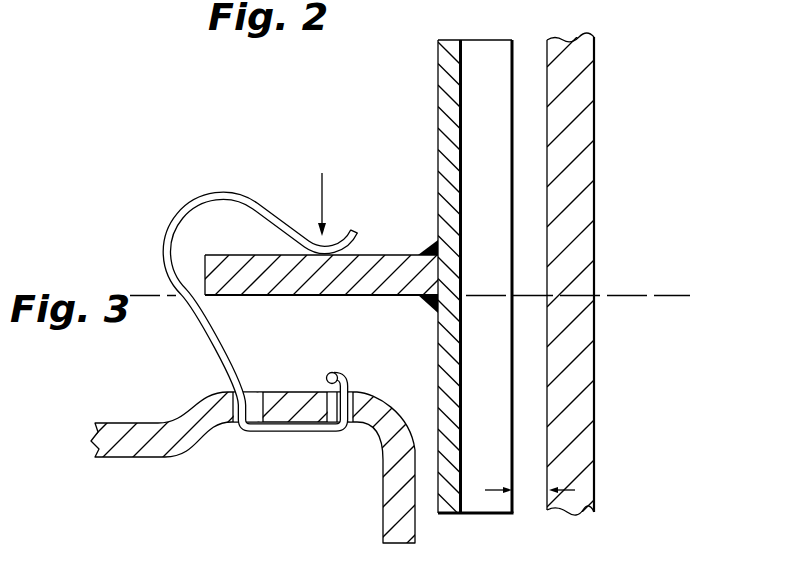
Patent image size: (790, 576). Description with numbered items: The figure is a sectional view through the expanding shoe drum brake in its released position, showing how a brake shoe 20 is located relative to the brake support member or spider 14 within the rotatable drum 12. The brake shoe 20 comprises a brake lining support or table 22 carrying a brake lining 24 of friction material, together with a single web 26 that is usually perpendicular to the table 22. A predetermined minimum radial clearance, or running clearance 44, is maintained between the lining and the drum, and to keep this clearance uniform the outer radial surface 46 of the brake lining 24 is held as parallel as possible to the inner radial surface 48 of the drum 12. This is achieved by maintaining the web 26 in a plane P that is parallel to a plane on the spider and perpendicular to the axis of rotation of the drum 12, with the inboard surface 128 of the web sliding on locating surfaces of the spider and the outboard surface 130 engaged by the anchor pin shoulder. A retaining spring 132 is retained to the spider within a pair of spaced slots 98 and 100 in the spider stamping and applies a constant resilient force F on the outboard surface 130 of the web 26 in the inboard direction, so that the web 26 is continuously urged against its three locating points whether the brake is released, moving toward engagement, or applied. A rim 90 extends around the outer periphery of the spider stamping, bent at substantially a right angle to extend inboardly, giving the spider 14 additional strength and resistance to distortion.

The rotatable drum 12 is at (580, 222).
The brake support member or spider 14 is at (126, 430).
The brake shoes 20 is at (368, 188).
The brake lining support or table 22 is at (447, 55).
The brake lining 24 is at (500, 72).
The web 26 is at (377, 272).
The running clearance 44 is at (530, 493).
The outer radial surface of the friction material 46 is at (517, 298).
The inner radial surface of the brake drum 48 is at (547, 128).
The rim 90 is at (403, 533).
The slot 98 is at (315, 395).
The slot 100 is at (257, 402).
The inboard surface of the web 128 is at (340, 297).
The outboard surface of the web 130 is at (240, 251).
The retaining spring 132 is at (172, 238).
The resilient force F is at (321, 190).
The plane P is at (636, 290).